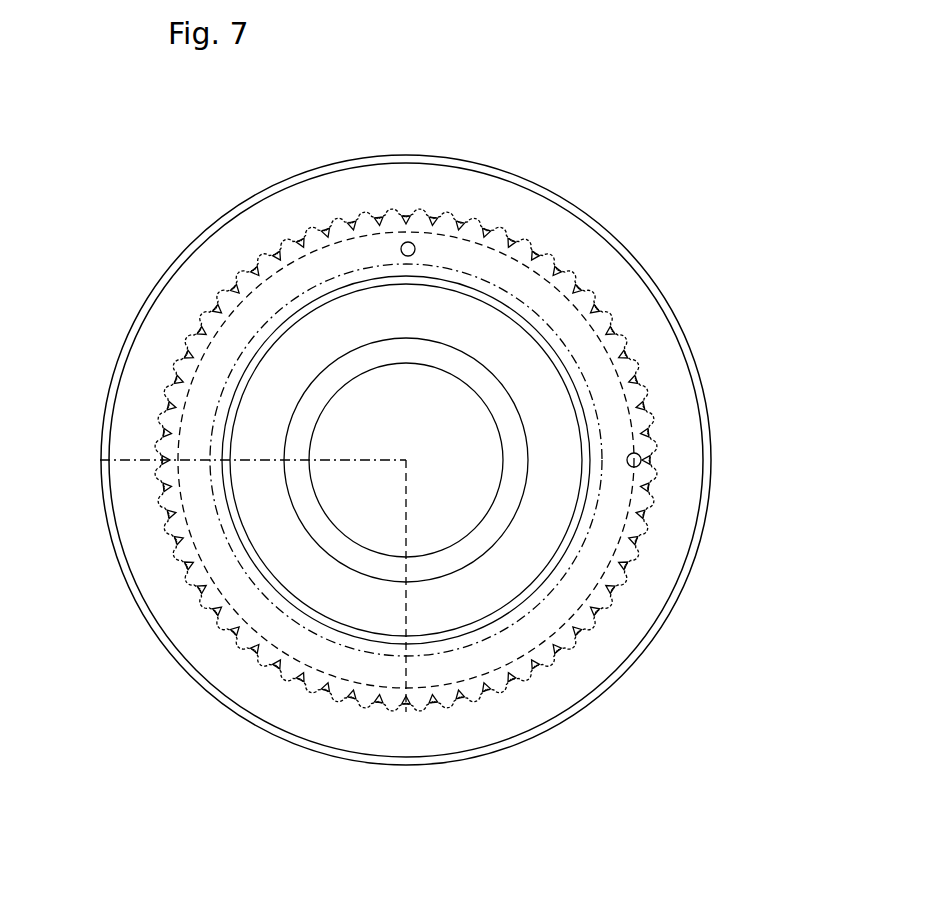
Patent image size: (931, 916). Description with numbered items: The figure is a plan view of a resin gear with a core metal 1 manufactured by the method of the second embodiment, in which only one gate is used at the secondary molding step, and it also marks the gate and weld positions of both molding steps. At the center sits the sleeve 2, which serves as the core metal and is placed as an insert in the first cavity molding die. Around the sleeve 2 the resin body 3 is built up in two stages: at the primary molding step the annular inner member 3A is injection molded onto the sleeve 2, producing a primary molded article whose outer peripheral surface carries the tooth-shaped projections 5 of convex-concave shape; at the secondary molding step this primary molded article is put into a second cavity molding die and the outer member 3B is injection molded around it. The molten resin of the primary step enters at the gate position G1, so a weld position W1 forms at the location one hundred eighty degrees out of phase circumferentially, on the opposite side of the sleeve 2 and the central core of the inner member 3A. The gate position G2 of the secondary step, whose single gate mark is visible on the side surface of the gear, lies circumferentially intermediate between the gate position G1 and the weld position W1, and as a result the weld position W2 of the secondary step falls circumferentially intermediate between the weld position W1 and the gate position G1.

The resin gear with a core metal 1 is at (210, 216).
The sleeve 2 is at (413, 362).
The resin body 3 is at (563, 108).
The inner member 3A is at (448, 308).
The outer member 3B is at (520, 203).
The tooth-shaped projections 5 is at (203, 307).
The gate position G1 is at (408, 242).
The gate position G2 is at (641, 458).
The weld position W1 is at (406, 665).
The weld position W2 is at (190, 458).